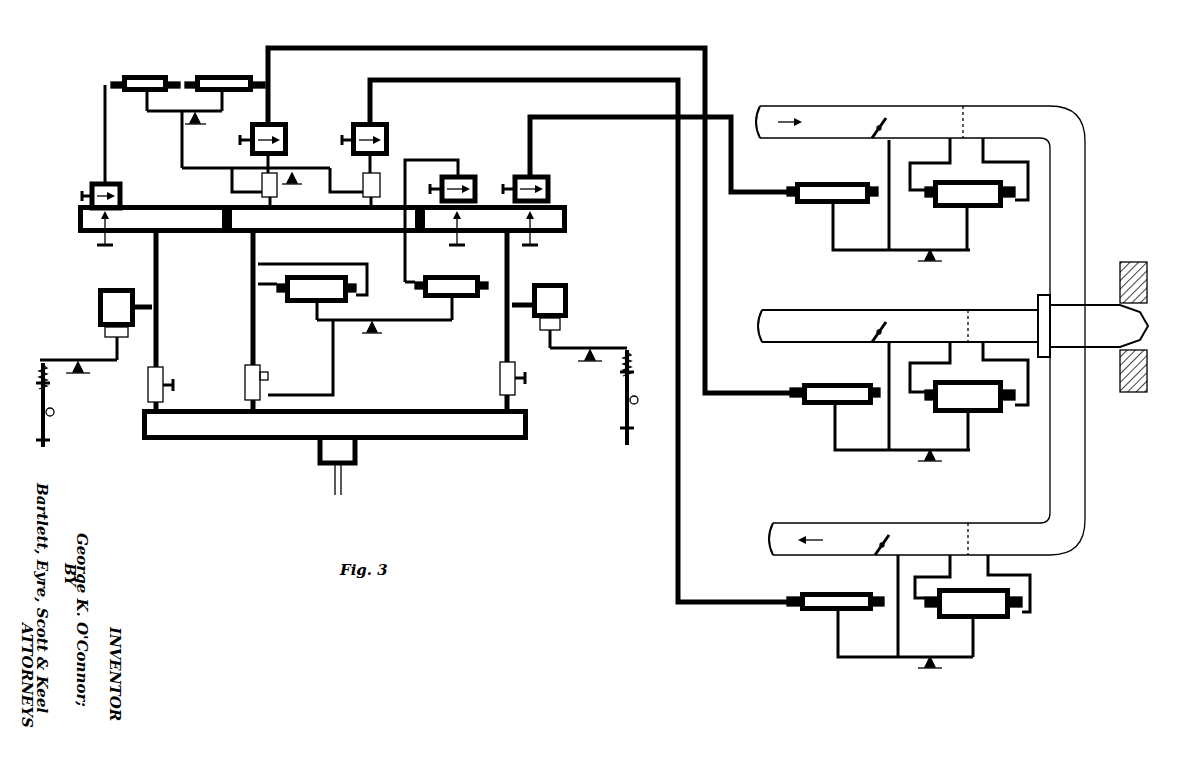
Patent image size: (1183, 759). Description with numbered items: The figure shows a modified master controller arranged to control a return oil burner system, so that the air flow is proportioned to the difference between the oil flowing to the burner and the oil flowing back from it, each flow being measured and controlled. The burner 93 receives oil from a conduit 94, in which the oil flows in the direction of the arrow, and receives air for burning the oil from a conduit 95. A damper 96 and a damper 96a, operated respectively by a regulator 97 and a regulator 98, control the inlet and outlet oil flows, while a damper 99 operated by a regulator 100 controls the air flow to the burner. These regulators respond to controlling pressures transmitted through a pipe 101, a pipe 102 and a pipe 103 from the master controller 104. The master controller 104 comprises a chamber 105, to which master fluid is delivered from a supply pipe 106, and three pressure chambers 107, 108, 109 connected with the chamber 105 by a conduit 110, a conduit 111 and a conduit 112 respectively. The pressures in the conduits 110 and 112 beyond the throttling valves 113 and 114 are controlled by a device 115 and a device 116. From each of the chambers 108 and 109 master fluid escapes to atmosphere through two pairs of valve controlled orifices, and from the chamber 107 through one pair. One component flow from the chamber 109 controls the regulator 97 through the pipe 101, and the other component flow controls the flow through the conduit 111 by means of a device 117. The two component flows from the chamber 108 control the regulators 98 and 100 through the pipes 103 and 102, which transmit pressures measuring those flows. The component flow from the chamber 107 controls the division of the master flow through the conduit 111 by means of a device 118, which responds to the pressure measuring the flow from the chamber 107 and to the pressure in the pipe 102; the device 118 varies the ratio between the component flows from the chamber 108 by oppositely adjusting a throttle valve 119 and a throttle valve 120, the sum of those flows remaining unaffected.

The burner 93 is at (1158, 326).
The conduit 94 is at (1075, 190).
The conduit 95 is at (992, 312).
The damper 96 is at (878, 112).
The damper 96a is at (882, 530).
The regulator 97 is at (905, 252).
The regulator 98 is at (912, 660).
The damper 99 is at (878, 316).
The regulator 100 is at (908, 452).
The pipe 101 is at (576, 117).
The pipe 102 is at (576, 48).
The pipe 103 is at (576, 80).
The master controller 104 is at (97, 312).
The chamber 105 is at (335, 425).
The supply pipe 106 is at (350, 490).
The pressure chamber 107 is at (153, 227).
The pressure chamber 108 is at (324, 219).
The pressure chamber 109 is at (494, 227).
The conduit 110 is at (160, 333).
The conduit 111 is at (258, 344).
The conduit 112 is at (503, 345).
The throttling valve 113 is at (163, 394).
The throttling valve 114 is at (500, 385).
The device 115 is at (78, 358).
The device 116 is at (588, 332).
The device 117 is at (395, 322).
The device 118 is at (160, 102).
The throttle valve 119 is at (278, 197).
The throttle valve 120 is at (381, 176).